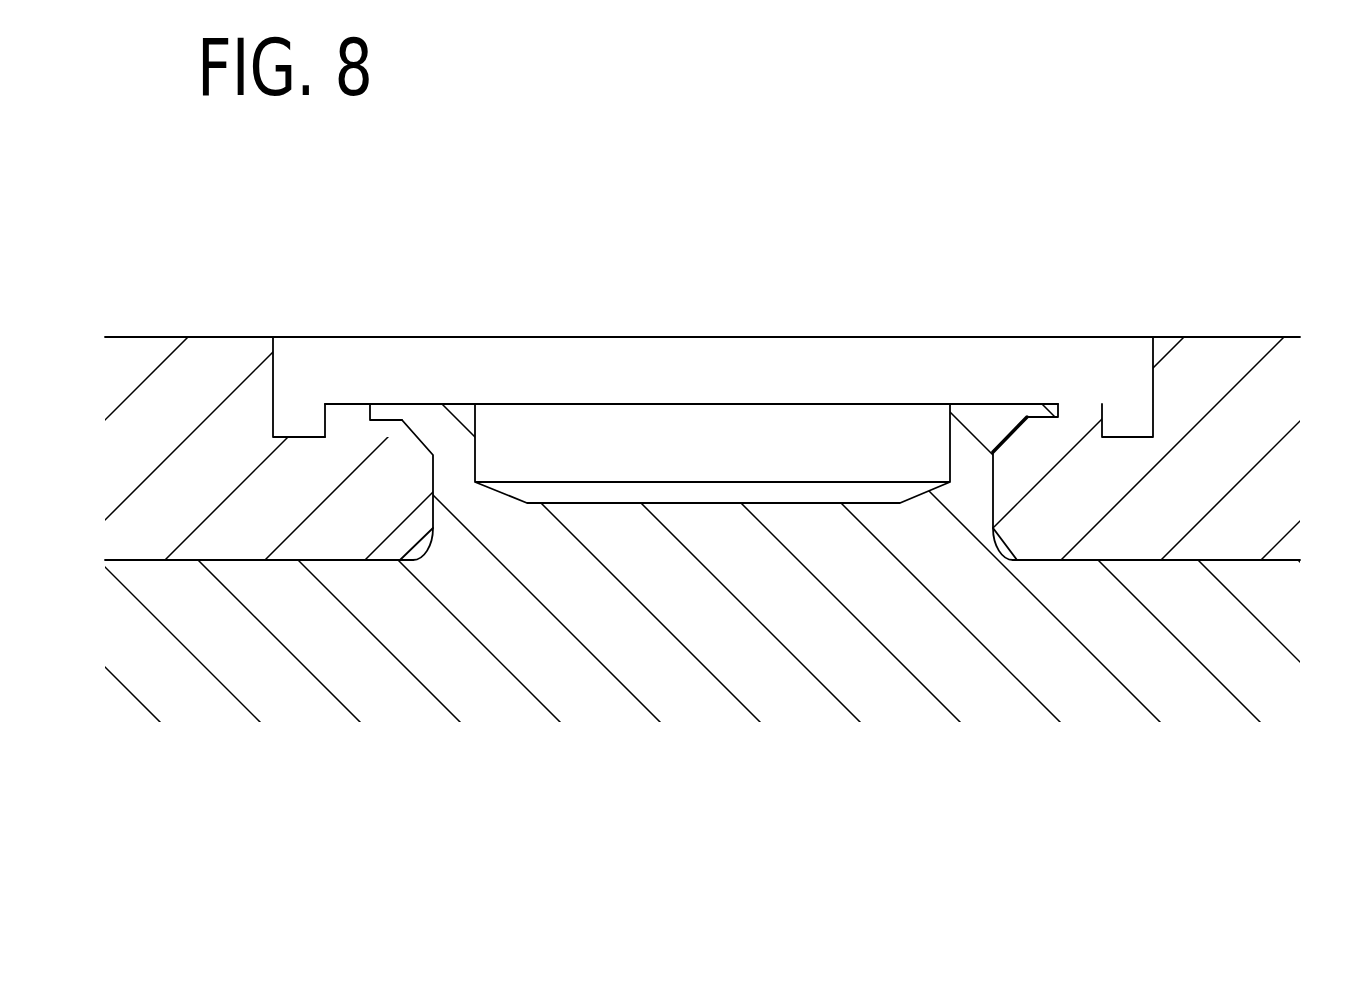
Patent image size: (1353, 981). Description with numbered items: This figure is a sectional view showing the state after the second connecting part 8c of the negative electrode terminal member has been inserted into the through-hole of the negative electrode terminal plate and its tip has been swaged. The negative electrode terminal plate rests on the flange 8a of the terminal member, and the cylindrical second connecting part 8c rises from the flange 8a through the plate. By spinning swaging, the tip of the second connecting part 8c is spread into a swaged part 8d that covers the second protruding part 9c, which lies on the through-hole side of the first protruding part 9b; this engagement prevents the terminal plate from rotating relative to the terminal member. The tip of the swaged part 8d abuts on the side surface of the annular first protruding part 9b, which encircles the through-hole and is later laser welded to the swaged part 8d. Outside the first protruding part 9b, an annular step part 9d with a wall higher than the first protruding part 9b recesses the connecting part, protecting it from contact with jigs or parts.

The flange 8a is at (235, 608).
The second connecting part 8c is at (474, 452).
The swaged part 8d is at (383, 410).
The first protruding part 9b is at (1090, 410).
The second protruding part 9c is at (1037, 427).
The step part 9d is at (287, 343).